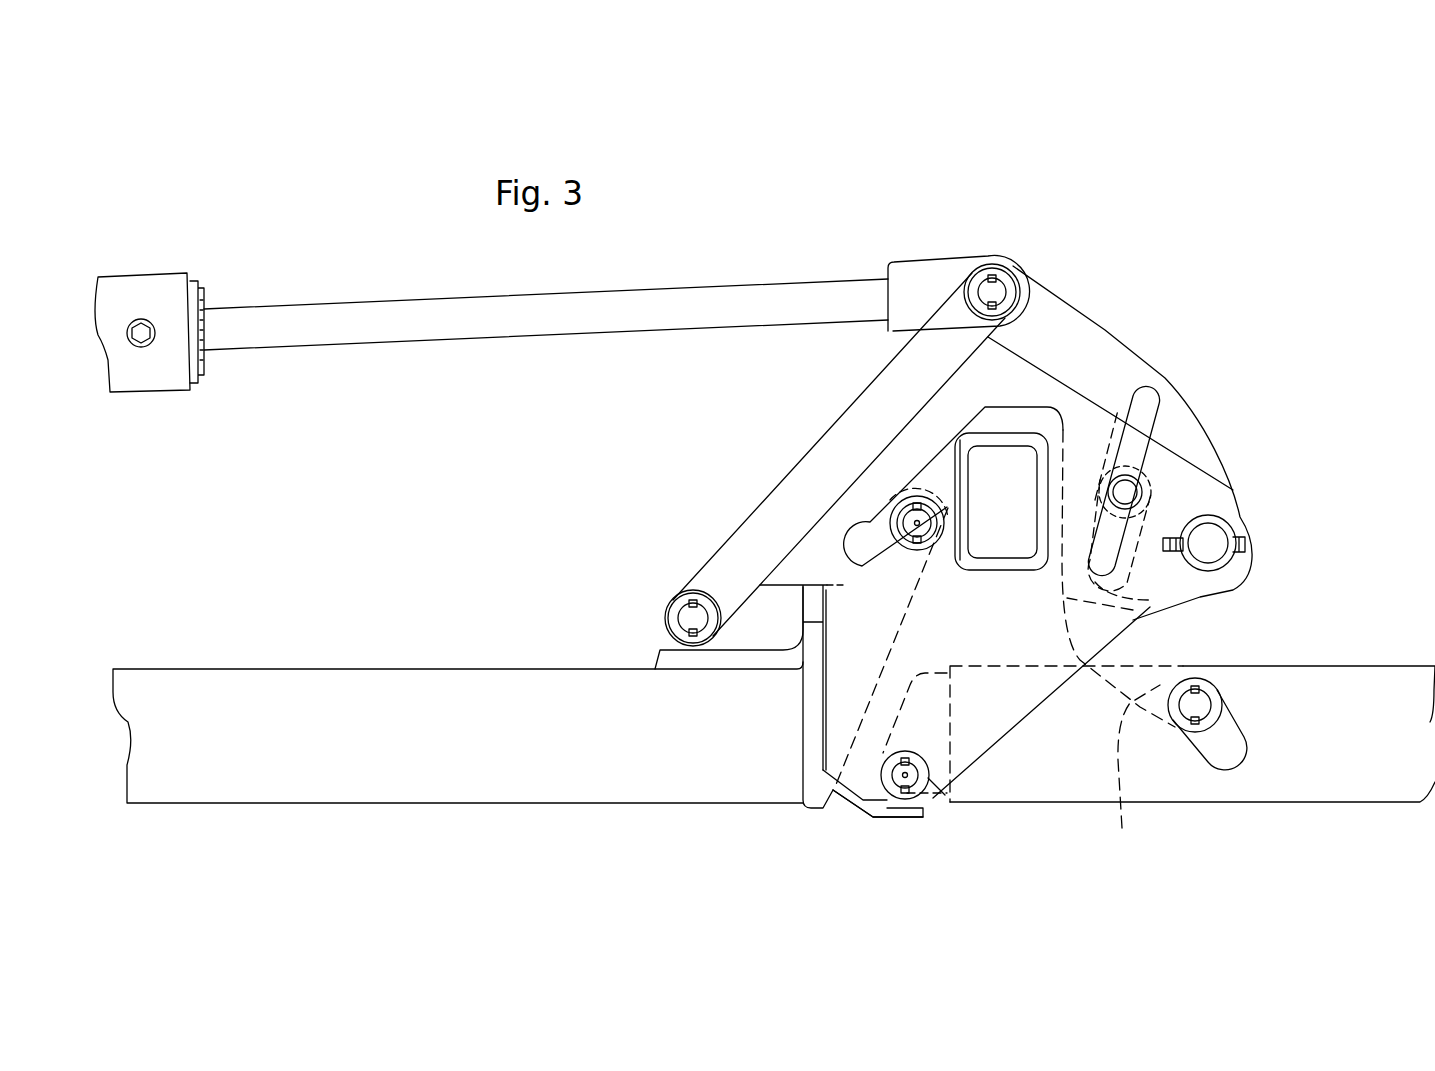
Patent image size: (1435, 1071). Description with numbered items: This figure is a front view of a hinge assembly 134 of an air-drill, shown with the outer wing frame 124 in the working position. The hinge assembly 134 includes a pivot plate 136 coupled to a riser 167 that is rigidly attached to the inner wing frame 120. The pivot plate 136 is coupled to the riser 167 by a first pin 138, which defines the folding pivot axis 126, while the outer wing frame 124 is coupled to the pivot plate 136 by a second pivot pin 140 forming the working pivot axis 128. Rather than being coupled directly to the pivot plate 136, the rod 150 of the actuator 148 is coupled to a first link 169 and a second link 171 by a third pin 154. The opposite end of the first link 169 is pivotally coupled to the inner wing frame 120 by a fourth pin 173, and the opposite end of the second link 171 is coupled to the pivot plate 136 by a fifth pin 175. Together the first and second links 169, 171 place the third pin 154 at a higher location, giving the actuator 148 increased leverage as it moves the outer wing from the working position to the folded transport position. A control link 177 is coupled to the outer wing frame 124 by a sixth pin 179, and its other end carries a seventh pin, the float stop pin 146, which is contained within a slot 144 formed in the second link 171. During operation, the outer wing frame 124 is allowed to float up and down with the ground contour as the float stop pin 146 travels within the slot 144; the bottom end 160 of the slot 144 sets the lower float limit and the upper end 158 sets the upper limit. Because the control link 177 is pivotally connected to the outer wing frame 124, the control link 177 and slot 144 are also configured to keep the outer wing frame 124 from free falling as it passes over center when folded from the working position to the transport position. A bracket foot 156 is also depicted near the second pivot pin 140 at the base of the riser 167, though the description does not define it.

The inner wing frame 120 is at (553, 668).
The outer wing frame 124 is at (1045, 802).
The folding pivot axis 126 is at (917, 523).
The working pivot axis 128 is at (925, 806).
The hinge assembly 134 is at (1106, 249).
The pivot plate 136 is at (925, 458).
The first pin 138 is at (897, 505).
The second pivot pin 140 is at (890, 800).
The slot 144 is at (1142, 466).
The float stop pin 146 is at (1153, 490).
The actuator 148 is at (145, 273).
The rod 150 is at (775, 280).
The third pin 154 is at (1022, 262).
The bracket foot 156 is at (842, 812).
The upper end 158 is at (1148, 398).
The bottom end 160 is at (1155, 593).
The riser 167 is at (803, 586).
The first link 169 is at (793, 463).
The second link 171 is at (1115, 332).
The fourth pin 173 is at (676, 614).
The fifth pin 175 is at (1225, 518).
The control link 177 is at (1130, 772).
The sixth pin 179 is at (1173, 732).